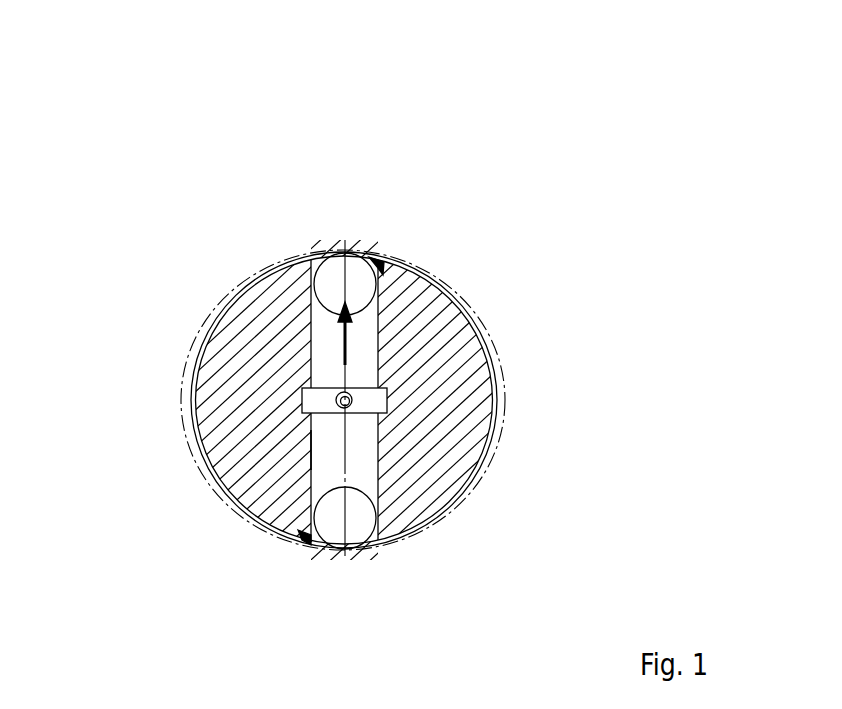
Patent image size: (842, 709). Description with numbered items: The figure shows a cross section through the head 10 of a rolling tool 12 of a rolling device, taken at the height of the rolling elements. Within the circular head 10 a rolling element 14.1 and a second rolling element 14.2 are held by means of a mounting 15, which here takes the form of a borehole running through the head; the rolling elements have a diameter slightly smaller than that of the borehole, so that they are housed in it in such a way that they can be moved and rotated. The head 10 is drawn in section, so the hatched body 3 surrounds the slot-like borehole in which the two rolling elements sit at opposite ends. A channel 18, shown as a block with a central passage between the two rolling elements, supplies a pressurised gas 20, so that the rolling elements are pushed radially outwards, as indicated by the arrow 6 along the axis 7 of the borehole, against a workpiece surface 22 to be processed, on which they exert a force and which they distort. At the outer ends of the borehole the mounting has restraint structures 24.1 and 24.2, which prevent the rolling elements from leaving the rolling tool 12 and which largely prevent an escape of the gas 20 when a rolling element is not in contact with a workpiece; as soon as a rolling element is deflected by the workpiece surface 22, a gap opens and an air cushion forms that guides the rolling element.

The housing body 3 is at (257, 347).
The direction of movement arrow 6 is at (343, 254).
The guide channel 7 is at (327, 360).
The head 10 is at (490, 362).
The rolling tool 12 is at (650, 189).
The rolling element 14.1 is at (336, 270).
The second rolling element 14.2 is at (373, 542).
The mounting 15 is at (311, 333).
The channel 18 is at (350, 390).
The pressurised gas 20 is at (305, 450).
The workpiece surface 22 is at (460, 297).
The restraint structure 24.1 is at (382, 272).
The restraint structure 24.2 is at (297, 540).